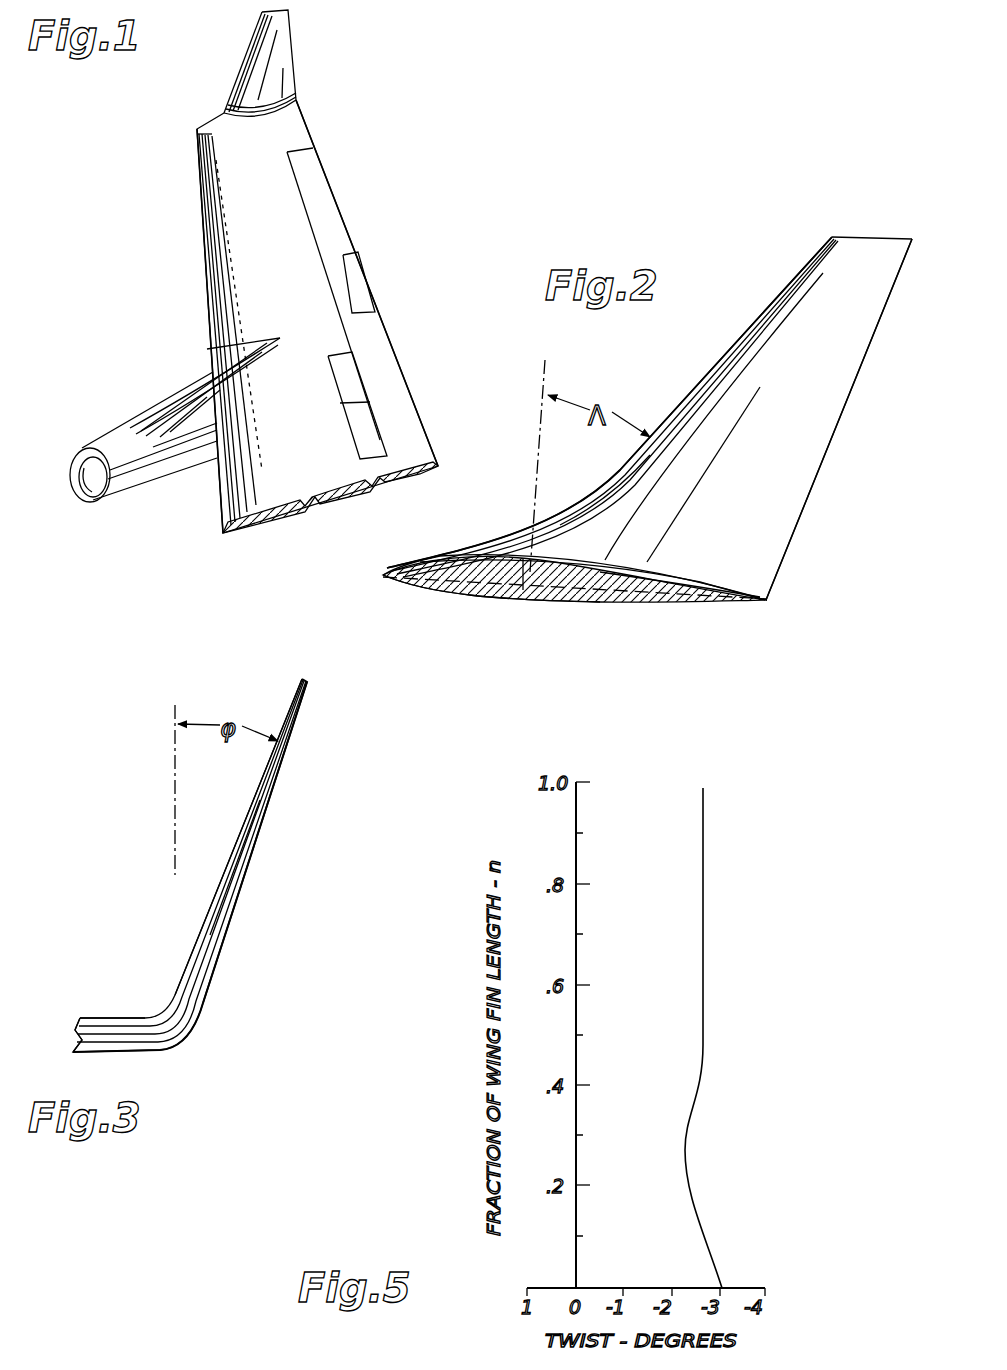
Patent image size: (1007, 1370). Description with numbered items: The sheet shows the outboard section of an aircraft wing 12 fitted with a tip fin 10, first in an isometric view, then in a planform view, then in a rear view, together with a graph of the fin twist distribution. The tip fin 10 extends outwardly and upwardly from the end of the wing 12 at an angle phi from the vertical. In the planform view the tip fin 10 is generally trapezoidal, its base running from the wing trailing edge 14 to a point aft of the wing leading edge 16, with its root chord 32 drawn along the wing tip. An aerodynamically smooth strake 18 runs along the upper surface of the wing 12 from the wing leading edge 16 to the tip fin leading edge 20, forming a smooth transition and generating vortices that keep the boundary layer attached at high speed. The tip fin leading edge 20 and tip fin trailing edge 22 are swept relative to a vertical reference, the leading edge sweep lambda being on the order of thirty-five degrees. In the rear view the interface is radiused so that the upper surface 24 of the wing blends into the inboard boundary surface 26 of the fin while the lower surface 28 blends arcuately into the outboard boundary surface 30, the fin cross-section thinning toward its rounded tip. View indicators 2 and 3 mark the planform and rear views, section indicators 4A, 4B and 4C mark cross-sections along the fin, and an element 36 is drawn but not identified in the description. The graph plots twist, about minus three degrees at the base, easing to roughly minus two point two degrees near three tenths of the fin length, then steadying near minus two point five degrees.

In FIG. 1, the tip fin 10 is at (276, 47).
In FIG. 2, the tip fin 10 is at (778, 476).
In FIG. 3, the tip fin 10 is at (243, 843).
In FIG. 1, the wing 12 is at (276, 226).
In FIG. 2, the wing 12 is at (568, 605).
In FIG. 3, the wing 12 is at (116, 1032).
In FIG. 1, the trailing edge 14 is at (352, 236).
In FIG. 2, the trailing edge 14 is at (768, 596).
In FIG. 1, the wing leading edge 16 is at (203, 248).
In FIG. 2, the wing leading edge 16 is at (382, 574).
In FIG. 2, the strake 18 is at (523, 560).
In FIG. 2, the tip fin leading edge 20 is at (707, 378).
In FIG. 2, the tip fin trailing edge 22 is at (835, 431).
In FIG. 3, the tip fin trailing edge 22 is at (228, 877).
In FIG. 1, the upper surface 24 is at (293, 298).
In FIG. 2, the upper surface 24 is at (607, 558).
In FIG. 3, the upper surface 24 is at (95, 1014).
In FIG. 3, the inboard boundary surface 26 is at (193, 930).
In FIG. 1, the lower surface 28 is at (312, 520).
In FIG. 2, the lower surface 28 is at (493, 600).
In FIG. 3, the lower surface 28 is at (160, 1050).
In FIG. 1, the outboard boundary surface 30 is at (175, 420).
In FIG. 3, the outboard boundary surface 30 is at (212, 935).
In FIG. 2, the root chord 32 is at (670, 584).
In FIG. 2, the fin root fillet 36 is at (557, 517).
In FIG. 1, the section line 2- 2 is at (312, 122).
In FIG. 2, the section line 3- 3 is at (912, 237).
In FIG. 3, the section line 4A- 4A is at (203, 885).
In FIG. 3, the section line 4B- 4B is at (173, 963).
In FIG. 3, the section line 4C- 4C is at (162, 1000).